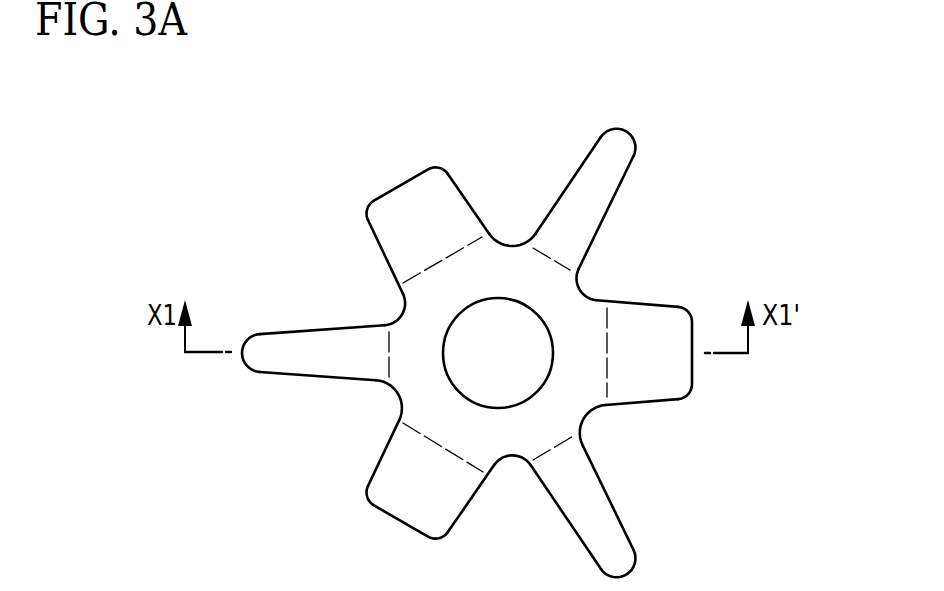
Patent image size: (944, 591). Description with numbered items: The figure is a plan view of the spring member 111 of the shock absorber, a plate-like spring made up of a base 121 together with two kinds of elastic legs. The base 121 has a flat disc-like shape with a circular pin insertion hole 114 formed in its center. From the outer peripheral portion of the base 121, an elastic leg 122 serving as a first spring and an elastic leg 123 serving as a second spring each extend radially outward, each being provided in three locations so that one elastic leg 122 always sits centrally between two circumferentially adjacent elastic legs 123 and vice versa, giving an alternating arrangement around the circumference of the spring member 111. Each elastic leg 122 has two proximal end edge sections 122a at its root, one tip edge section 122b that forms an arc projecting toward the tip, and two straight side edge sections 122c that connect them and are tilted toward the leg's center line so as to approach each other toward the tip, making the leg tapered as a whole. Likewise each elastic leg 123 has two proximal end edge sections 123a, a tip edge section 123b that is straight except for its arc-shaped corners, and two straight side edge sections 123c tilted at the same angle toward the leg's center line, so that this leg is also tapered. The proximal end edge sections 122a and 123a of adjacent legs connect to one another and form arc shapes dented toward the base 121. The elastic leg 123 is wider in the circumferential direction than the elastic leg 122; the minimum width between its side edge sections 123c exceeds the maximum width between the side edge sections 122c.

The spring member 111 is at (738, 246).
The pin insertion hole 114 is at (468, 400).
The base 121 is at (570, 406).
The elastic leg 122 is at (614, 170).
The proximal end edge section 122a is at (530, 226).
The tip edge section 122b is at (624, 132).
The side edge section 122c is at (574, 182).
The elastic leg 123 is at (403, 220).
The proximal end edge section 123a is at (500, 240).
The tip edge section 123b is at (403, 187).
The side edge section 123c is at (470, 195).